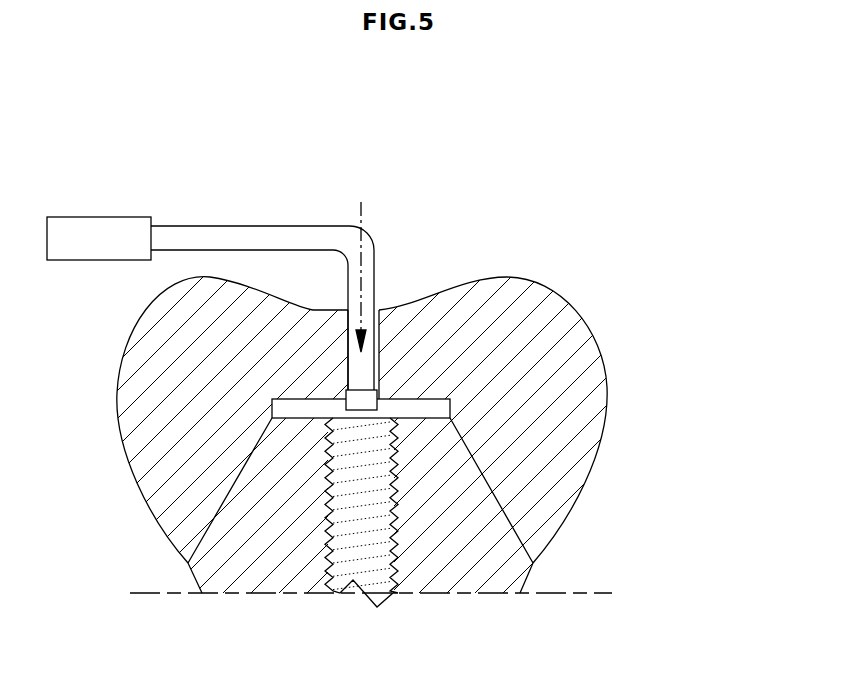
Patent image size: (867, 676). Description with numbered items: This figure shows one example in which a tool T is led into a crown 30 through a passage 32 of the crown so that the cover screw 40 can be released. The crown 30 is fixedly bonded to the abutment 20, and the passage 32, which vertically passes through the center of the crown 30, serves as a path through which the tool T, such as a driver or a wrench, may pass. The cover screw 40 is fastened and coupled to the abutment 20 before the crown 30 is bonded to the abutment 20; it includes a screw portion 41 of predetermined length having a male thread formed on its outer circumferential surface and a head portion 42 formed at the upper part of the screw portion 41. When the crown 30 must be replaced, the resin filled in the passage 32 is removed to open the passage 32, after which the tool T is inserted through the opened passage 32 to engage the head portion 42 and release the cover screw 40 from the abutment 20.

The tool T is at (315, 226).
The abutment 20 is at (497, 572).
The crown 30 is at (620, 372).
The passage 32 is at (378, 343).
The cover screw 40 is at (317, 475).
The screw portion 41 is at (393, 497).
The head portion 42 is at (443, 410).